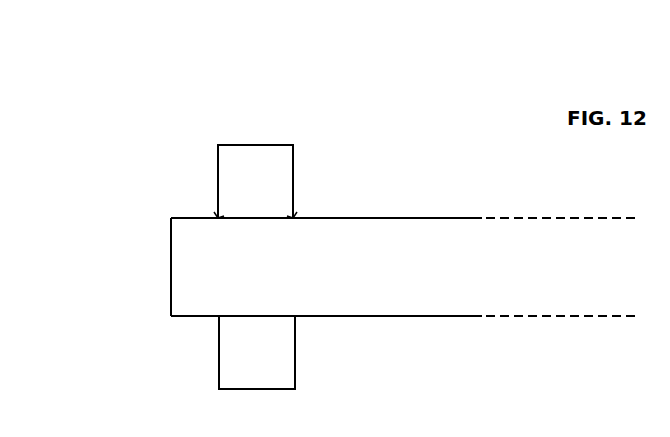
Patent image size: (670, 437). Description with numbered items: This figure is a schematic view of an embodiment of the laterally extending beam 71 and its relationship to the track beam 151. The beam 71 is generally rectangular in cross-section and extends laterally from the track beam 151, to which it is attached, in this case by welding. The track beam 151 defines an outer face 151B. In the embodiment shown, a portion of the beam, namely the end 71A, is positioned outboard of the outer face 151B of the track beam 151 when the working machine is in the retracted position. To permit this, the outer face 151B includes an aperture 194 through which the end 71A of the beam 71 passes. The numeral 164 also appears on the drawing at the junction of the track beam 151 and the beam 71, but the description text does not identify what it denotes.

The laterally extending beam 71 is at (420, 281).
The end of the laterally extending beam 71A is at (217, 268).
The track beam 151 is at (256, 177).
The outer face 151B is at (219, 367).
The aperture 194 is at (218, 218).
The right corner junction 164 is at (293, 218).